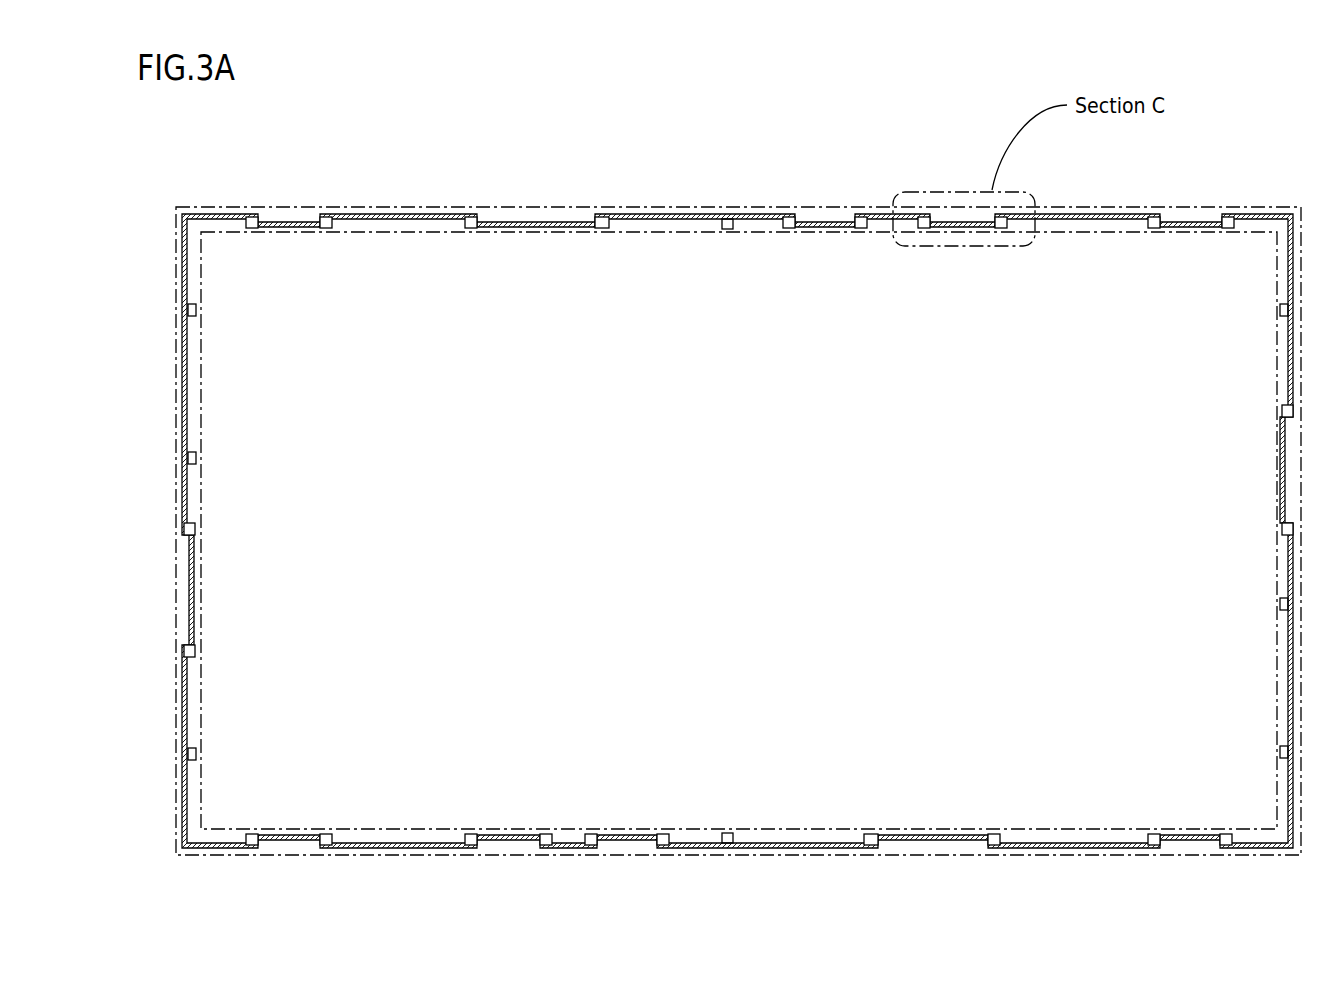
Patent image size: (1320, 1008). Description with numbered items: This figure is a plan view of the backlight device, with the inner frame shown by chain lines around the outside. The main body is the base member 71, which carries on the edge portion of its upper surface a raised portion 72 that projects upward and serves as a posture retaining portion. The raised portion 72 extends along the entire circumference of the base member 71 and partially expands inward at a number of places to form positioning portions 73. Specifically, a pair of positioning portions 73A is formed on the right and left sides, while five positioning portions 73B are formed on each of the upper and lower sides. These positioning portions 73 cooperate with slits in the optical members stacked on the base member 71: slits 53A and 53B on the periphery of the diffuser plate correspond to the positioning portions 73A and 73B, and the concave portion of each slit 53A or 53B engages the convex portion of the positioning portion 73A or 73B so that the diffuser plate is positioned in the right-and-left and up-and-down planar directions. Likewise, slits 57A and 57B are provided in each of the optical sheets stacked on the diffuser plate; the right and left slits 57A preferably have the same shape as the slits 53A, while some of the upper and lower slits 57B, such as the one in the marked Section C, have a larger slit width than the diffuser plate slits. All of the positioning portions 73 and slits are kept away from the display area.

The base member 71 is at (738, 497).
The raised portion 72 is at (1068, 215).
The positioning portions 73 is at (738, 531).
The positioning portions 73A is at (185, 557).
The positioning portions 73B is at (284, 221).
The slits 53A is at (738, 532).
The slits 57A is at (1278, 442).
The slits 53B is at (916, 538).
The slits 57B is at (727, 531).